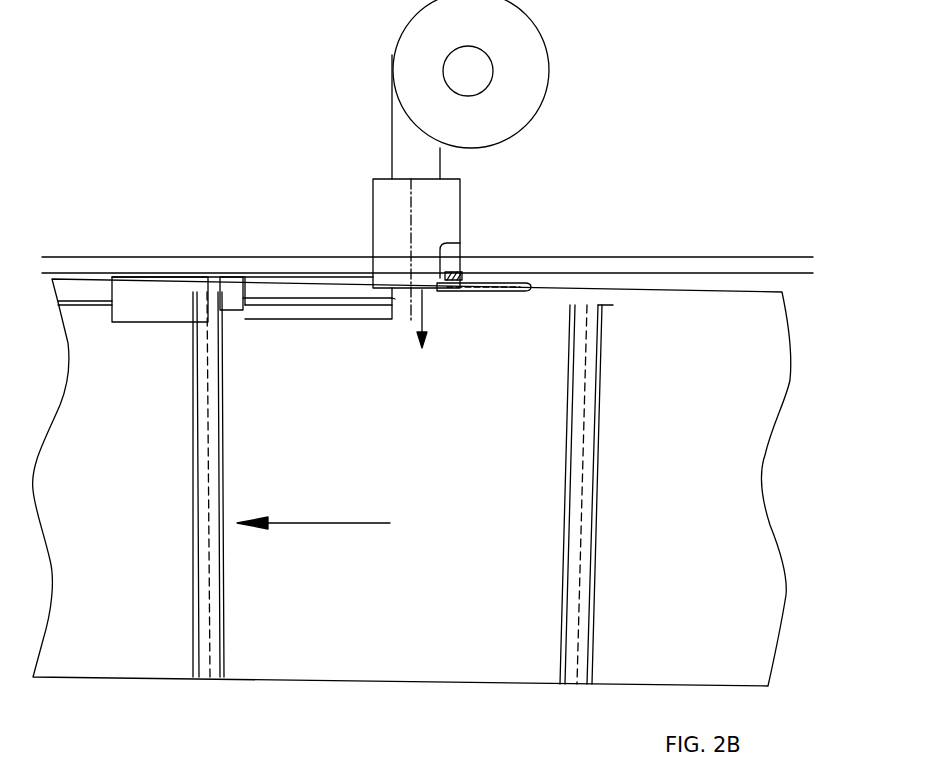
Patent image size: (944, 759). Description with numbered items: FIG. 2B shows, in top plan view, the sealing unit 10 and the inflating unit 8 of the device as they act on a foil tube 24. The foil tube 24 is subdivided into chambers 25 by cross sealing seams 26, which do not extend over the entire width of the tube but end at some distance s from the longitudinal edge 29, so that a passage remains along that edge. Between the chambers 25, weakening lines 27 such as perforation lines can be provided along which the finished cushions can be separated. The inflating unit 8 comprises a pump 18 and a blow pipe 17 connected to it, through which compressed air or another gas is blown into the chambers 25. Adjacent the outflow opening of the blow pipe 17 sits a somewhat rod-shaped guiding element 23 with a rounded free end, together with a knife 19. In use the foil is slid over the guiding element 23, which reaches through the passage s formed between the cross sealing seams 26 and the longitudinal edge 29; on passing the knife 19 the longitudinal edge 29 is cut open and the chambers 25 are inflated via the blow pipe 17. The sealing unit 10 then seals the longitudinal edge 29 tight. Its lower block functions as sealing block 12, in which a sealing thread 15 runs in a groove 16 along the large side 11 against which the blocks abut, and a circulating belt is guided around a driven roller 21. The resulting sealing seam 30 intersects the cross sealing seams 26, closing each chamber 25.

The inflating unit 8 is at (362, 60).
The sealing unit 10 is at (259, 240).
The large side 11 is at (338, 297).
The sealing block 12 is at (265, 288).
The sealing thread 15 is at (276, 300).
The groove 16 is at (394, 300).
The blow pipe 17 is at (444, 198).
The pump 18 is at (508, 118).
The knife 19 is at (460, 278).
The driven roller 21 is at (167, 292).
The guiding element 23 is at (517, 291).
The foil tube 24 is at (750, 414).
The chambers 25 is at (108, 601).
The cross sealing seams 26 is at (195, 580).
The weakening lines 27 is at (208, 621).
The longitudinal edge 29 is at (706, 287).
The sealing seam 30 is at (73, 305).
The distance s is at (624, 287).